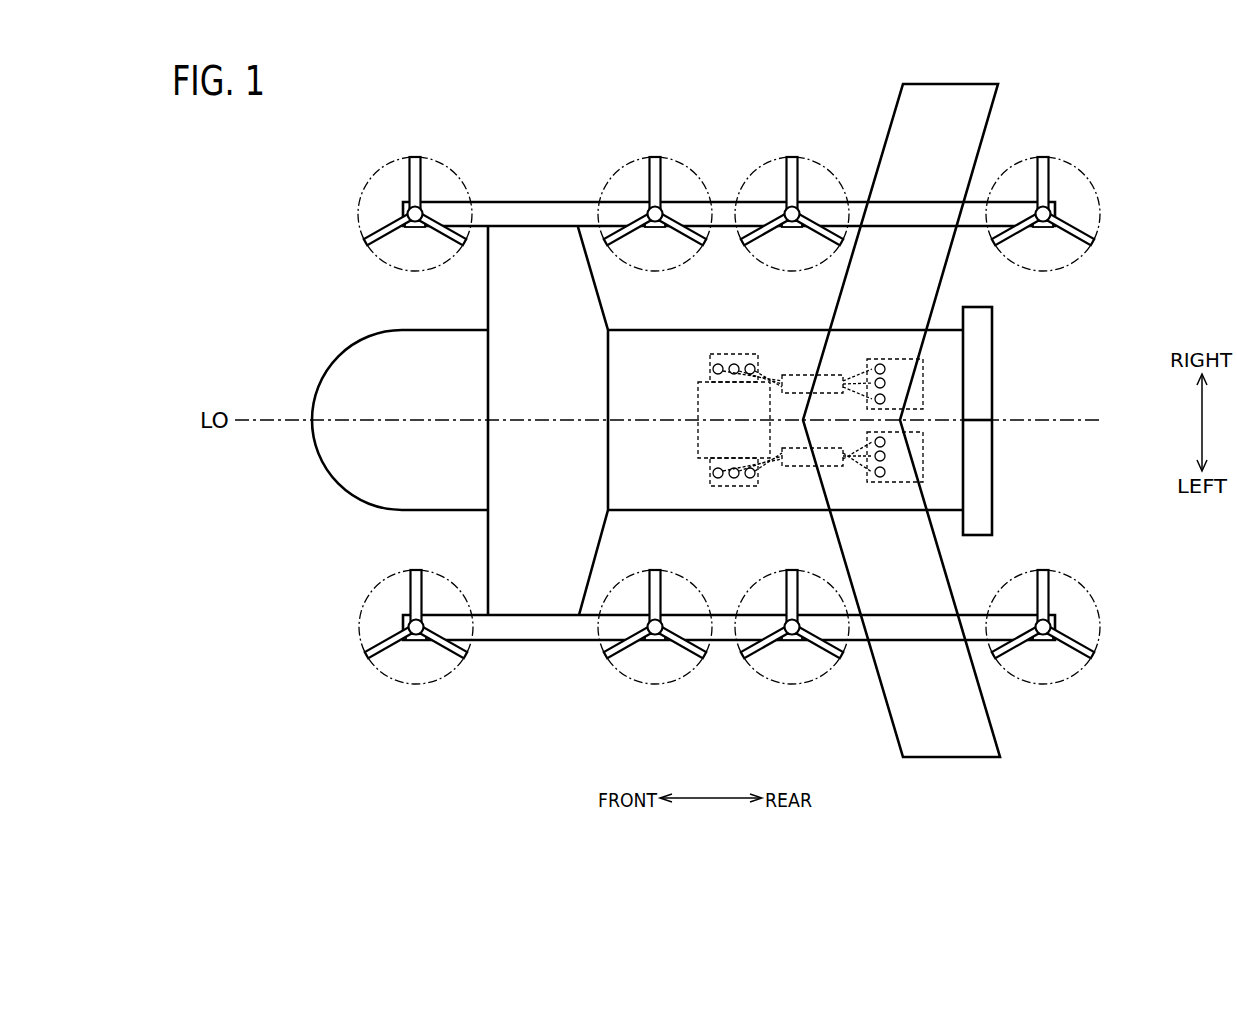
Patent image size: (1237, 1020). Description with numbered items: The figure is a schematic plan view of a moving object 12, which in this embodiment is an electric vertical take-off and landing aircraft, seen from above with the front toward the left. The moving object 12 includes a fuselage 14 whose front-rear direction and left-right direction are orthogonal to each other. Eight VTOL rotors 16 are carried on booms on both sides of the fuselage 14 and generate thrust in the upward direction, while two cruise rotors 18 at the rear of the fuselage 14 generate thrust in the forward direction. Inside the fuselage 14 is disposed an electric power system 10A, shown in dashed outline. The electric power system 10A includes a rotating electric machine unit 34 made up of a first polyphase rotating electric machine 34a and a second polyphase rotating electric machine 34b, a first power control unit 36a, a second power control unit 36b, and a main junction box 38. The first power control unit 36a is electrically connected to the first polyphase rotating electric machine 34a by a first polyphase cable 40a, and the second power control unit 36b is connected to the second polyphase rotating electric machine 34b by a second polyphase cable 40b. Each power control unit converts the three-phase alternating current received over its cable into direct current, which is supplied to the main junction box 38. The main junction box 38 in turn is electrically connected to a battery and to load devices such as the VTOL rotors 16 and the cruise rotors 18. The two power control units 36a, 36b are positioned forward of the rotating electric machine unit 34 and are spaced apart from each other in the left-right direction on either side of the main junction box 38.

The electric power system 10A is at (690, 437).
The moving object 12 is at (594, 420).
The fuselage 14 is at (333, 358).
The VTOL rotor 16 is at (410, 175).
The cruise rotor 18 is at (980, 360).
The rotating electric machine unit 34 is at (910, 330).
The first polyphase rotating electric machine 34a is at (887, 359).
The second polyphase rotating electric machine 34b is at (897, 482).
The first power control unit 36a is at (728, 354).
The second power control unit 36b is at (728, 486).
The main junction box 38 is at (712, 402).
The first polyphase cable 40a is at (798, 375).
The second polyphase cable 40b is at (798, 466).